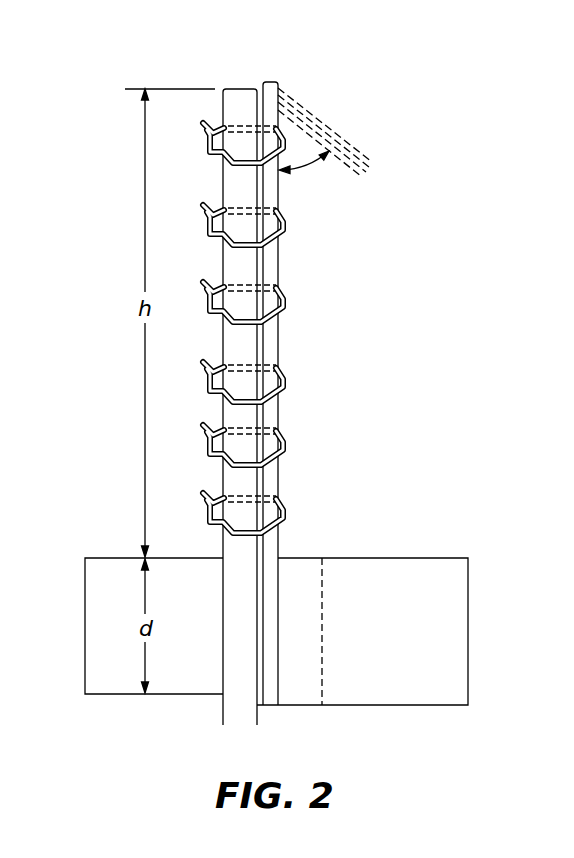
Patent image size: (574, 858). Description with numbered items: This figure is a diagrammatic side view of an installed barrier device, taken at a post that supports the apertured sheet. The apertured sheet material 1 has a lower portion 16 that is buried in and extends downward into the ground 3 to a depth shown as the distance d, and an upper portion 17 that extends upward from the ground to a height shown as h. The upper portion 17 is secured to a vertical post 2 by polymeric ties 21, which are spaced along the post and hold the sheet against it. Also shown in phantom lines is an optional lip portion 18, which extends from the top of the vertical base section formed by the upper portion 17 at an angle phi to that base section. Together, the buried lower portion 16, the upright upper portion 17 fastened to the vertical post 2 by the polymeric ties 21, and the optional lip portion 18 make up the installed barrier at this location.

The apertured sheet material 1 is at (312, 372).
The vertical post 2 is at (241, 101).
The ground 3 is at (455, 598).
The lower portion 16 is at (268, 615).
The upper portion 17 is at (278, 257).
The lip portion 18 is at (339, 120).
The polymeric ties 21 is at (207, 377).